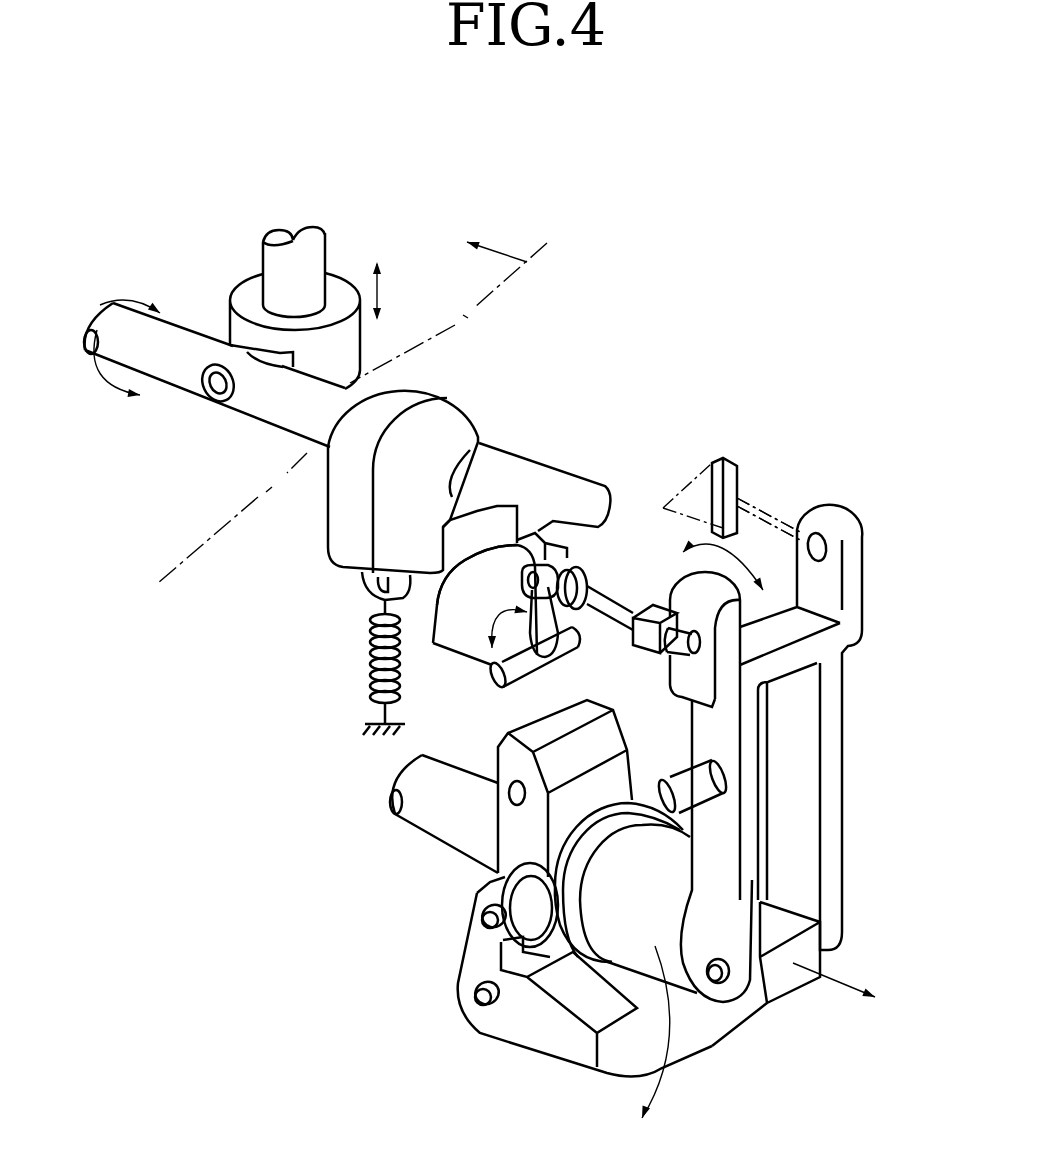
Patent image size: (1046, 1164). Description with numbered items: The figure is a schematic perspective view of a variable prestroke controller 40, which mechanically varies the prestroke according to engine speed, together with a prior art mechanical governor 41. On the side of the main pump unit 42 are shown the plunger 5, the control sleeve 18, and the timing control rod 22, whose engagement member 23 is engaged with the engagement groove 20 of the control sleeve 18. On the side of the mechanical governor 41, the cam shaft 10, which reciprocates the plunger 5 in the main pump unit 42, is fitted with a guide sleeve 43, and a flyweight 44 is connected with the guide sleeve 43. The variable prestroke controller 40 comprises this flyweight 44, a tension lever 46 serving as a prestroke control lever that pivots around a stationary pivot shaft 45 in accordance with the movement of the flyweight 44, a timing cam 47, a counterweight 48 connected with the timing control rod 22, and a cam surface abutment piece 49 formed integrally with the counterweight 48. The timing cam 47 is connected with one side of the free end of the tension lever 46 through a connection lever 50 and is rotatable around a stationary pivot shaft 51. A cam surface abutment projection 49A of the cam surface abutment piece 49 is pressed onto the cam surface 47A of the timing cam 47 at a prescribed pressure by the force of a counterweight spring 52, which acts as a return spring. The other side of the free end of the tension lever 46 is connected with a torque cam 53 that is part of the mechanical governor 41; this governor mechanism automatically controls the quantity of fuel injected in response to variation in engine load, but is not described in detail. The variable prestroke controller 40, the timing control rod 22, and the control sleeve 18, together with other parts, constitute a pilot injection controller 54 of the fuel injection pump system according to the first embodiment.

The plunger 5 is at (275, 250).
The control sleeve 18 is at (336, 296).
The engagement member 23 is at (235, 345).
The timing control rod 22 is at (168, 360).
The engagement groove 20 is at (285, 368).
The main pump unit 42 is at (352, 390).
The variable prestroke controller 40 is at (530, 338).
The cam surface abutment piece 49 is at (533, 483).
The cam surface 47A is at (464, 580).
The cam surface abutment projection 49A is at (533, 530).
The pilot injection controller 54 is at (833, 332).
The torque cam 53 is at (733, 460).
The mechanical governor 41 is at (852, 438).
The counterweight 48 is at (342, 499).
The counterweight spring 52 is at (370, 677).
The timing cam 47 is at (462, 633).
The connection lever 50 is at (620, 615).
The stationary pivot shaft 51 is at (513, 675).
The stationary pivot shaft 45 is at (685, 785).
The tension lever 46 is at (727, 848).
The cam shaft 10 is at (423, 823).
The flyweight 44 is at (500, 1027).
The guide sleeve 43 is at (600, 1067).